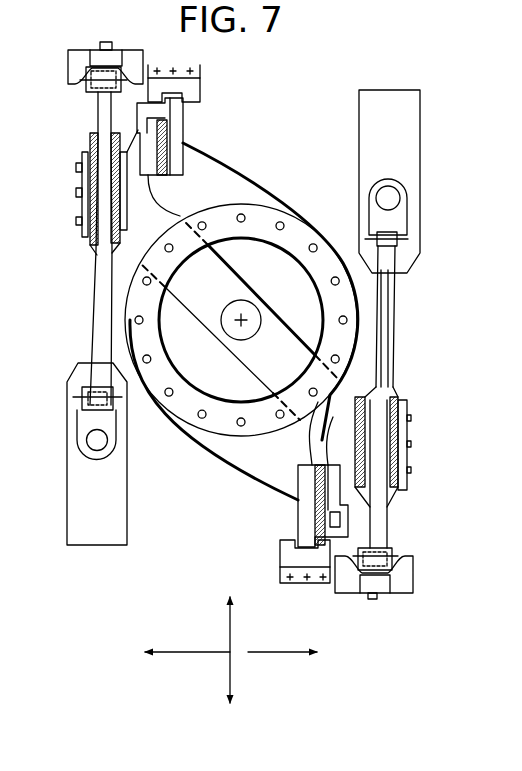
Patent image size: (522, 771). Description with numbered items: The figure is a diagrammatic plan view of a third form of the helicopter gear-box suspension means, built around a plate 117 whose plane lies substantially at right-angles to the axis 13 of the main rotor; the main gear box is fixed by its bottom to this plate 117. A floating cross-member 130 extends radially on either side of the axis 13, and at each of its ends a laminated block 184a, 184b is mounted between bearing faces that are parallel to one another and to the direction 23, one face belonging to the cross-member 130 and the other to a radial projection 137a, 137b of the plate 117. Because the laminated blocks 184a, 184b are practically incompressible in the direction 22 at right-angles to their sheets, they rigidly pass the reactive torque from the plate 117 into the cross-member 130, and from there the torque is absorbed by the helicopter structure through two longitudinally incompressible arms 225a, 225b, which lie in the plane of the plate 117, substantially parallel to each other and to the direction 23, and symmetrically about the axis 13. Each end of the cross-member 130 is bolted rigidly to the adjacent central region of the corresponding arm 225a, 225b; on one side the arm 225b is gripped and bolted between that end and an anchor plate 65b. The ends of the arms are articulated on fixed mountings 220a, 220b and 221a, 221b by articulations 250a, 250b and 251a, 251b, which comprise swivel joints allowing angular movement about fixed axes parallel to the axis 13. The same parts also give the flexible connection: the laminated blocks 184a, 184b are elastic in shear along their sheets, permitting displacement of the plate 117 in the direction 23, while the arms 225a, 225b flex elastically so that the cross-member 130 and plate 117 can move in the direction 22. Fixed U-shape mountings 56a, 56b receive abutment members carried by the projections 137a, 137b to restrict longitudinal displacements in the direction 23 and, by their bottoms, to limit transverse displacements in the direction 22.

The axis of the main rotor 13 is at (238, 322).
The direction at right-angles to the laminated sheets 22 is at (183, 650).
The longitudinal direction parallel to the arms 23 is at (235, 676).
The fixed U-shape mounting 56a is at (280, 541).
The fixed U-shape mounting 56b is at (217, 82).
The anchor plate 65b is at (76, 178).
The plate 117 is at (290, 222).
The floating cross-member 130 is at (217, 264).
The radial projection 137a is at (222, 452).
The radial projection 137b is at (233, 173).
The laminated block 184a is at (315, 506).
The laminated block 184b is at (162, 147).
The fixed mounting 220a is at (413, 578).
The fixed mounting 220b is at (68, 52).
The fixed mounting 221a is at (377, 90).
The fixed mounting 221b is at (67, 502).
The arm 225a is at (387, 333).
The arm 225b is at (98, 272).
The articulation 250a is at (400, 550).
The articulation 250b is at (79, 89).
The articulation 251a is at (354, 192).
The articulation 251b is at (62, 438).